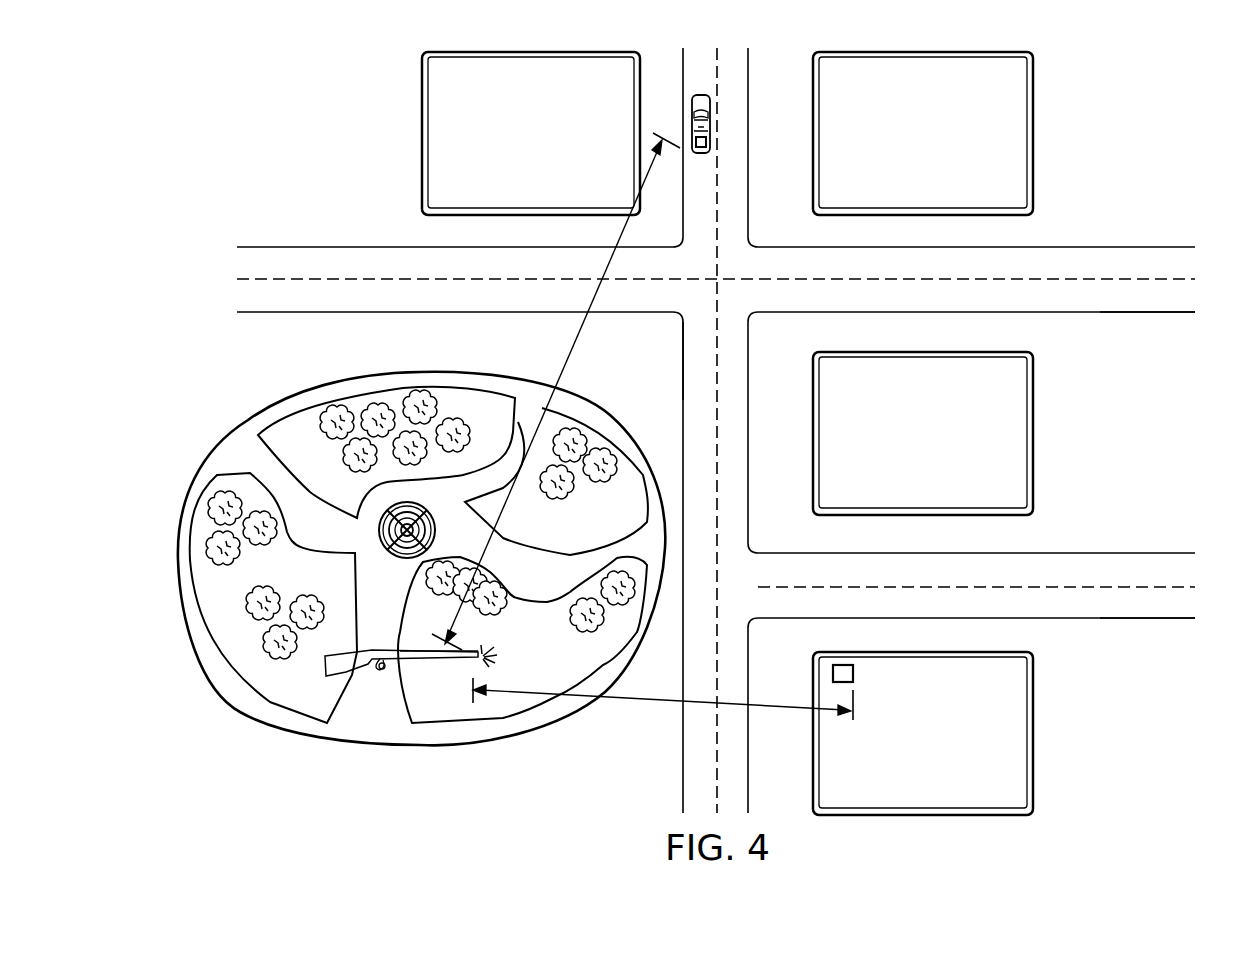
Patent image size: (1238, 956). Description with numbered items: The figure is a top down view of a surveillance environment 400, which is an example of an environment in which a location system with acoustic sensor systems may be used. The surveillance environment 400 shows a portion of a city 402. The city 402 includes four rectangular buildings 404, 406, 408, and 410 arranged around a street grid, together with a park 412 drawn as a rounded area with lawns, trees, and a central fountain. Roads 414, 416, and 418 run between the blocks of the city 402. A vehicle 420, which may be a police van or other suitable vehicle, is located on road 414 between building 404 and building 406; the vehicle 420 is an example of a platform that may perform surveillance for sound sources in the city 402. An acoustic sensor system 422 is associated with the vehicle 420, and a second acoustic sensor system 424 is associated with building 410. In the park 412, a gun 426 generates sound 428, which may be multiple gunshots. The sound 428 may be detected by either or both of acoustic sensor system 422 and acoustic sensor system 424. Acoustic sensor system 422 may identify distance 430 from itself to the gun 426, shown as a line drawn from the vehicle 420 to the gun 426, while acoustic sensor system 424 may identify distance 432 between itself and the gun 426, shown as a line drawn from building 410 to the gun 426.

The surveillance environment 400 is at (158, 108).
The city 402 is at (1105, 190).
The building 404 is at (1034, 132).
The building 406 is at (422, 132).
The building 408 is at (1034, 432).
The building 410 is at (1034, 732).
The park 412 is at (278, 397).
The road 414 is at (683, 368).
The road 416 is at (1141, 313).
The road 418 is at (1141, 619).
The vehicle 420 is at (712, 103).
The acoustic sensor system 422 is at (712, 147).
The acoustic sensor system 424 is at (855, 674).
The gun 426 is at (376, 668).
The sound 428 is at (490, 658).
The distance 430 is at (563, 357).
The distance 432 is at (624, 701).